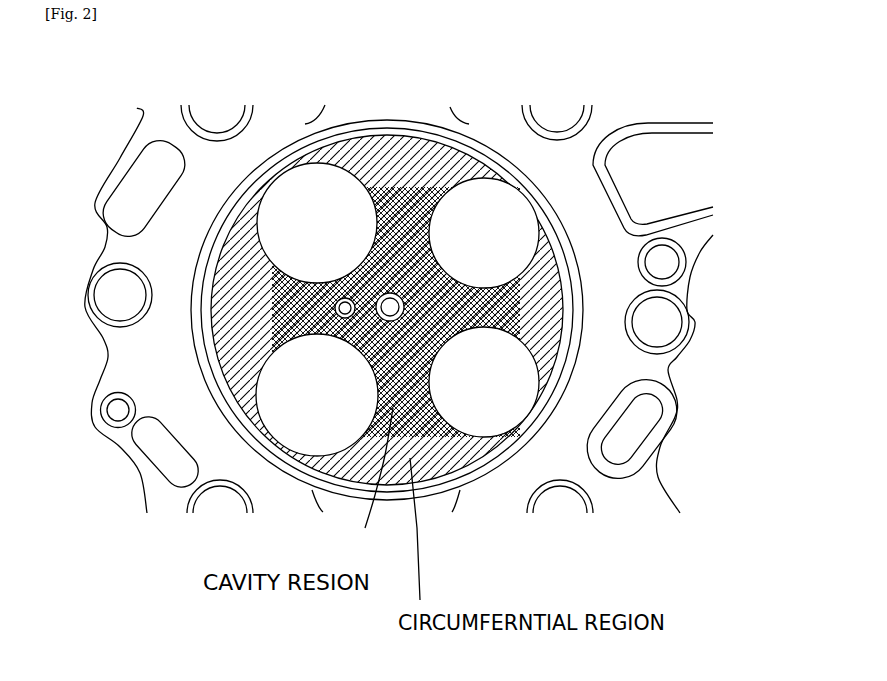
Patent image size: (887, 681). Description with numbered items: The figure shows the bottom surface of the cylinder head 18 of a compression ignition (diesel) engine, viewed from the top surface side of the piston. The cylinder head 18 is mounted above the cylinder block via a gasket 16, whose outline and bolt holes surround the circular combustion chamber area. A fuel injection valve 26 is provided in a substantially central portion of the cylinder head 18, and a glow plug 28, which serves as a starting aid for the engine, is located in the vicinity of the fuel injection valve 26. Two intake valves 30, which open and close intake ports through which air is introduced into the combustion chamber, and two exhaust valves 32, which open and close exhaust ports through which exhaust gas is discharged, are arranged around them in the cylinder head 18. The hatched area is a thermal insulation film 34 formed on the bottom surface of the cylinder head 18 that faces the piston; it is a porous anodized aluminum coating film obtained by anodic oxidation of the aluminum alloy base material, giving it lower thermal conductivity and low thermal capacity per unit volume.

The gasket 16 is at (127, 133).
The cylinder head 18 is at (312, 130).
The fuel injection valve 26 is at (391, 293).
The glow plug 28 is at (347, 298).
The intake valve 30 is at (288, 184).
The exhaust valve 32 is at (482, 198).
The thermal insulation film 34 is at (243, 357).